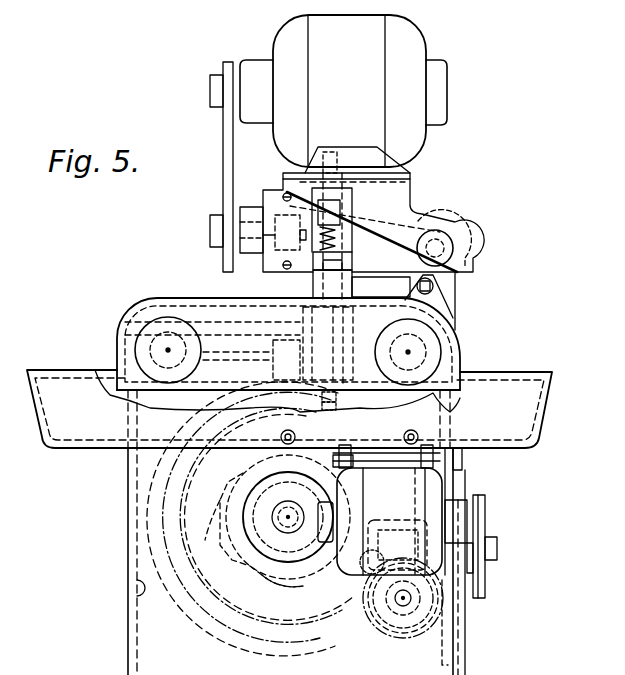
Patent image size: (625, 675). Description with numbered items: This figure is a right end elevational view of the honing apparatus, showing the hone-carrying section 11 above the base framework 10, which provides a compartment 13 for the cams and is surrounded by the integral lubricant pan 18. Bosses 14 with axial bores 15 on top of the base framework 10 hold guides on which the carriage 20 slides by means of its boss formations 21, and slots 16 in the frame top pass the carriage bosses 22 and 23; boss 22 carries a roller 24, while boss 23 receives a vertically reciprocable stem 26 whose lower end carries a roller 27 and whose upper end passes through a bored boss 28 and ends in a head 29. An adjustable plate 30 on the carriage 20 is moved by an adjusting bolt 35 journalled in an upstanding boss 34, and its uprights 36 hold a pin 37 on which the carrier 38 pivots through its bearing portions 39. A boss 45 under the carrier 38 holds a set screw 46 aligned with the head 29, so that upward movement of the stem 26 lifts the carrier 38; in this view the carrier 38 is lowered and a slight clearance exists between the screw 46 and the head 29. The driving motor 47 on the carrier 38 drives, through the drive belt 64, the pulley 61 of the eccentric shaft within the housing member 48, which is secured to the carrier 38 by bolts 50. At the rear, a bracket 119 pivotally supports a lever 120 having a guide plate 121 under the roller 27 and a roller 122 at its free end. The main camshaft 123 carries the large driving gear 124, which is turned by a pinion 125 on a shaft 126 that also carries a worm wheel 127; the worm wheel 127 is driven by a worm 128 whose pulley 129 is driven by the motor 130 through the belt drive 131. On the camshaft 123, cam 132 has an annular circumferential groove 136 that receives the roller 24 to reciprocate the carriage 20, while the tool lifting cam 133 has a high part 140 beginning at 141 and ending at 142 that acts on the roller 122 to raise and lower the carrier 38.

The base framework 10 is at (119, 541).
The hone-carrying section 11 is at (280, 183).
The compartment 13 is at (136, 598).
The bosses 14 is at (120, 355).
The axial bores 15 is at (462, 352).
The elongated slots 16 is at (272, 348).
The lubricant pan 18 is at (552, 400).
The carriage 20 is at (154, 287).
The boss formations 21 is at (332, 399).
The boss 22 is at (273, 324).
The boss 23 is at (303, 306).
The roller 24 is at (270, 388).
The stem 26 is at (353, 366).
The roller 27 is at (321, 411).
The bored boss 28 is at (348, 268).
The head 29 is at (337, 262).
The plate 30 is at (452, 284).
The upstanding boss 34 is at (452, 308).
The adjusting bolt 35 is at (450, 297).
The upright 36 is at (472, 256).
The pin 37 is at (470, 232).
The carrier 38 is at (410, 170).
The bearing portions 39 is at (453, 222).
The boss 45 is at (358, 173).
The set screw 46 is at (340, 236).
The driving motor 47 is at (328, 97).
The housing member 48 is at (240, 218).
The bolts 50 is at (283, 197).
The pulley 61 is at (215, 255).
The drive belt 64 is at (223, 150).
The bracket 119 is at (376, 490).
The lever 120 is at (288, 517).
The guide plate 121 is at (288, 482).
The roller 122 is at (280, 454).
The main camshaft 123 is at (288, 517).
The driving gear 124 is at (245, 612).
The pinion 125 is at (397, 638).
The shaft 126 is at (430, 611).
The worm wheel 127 is at (441, 633).
The worm 128 is at (395, 526).
The pulley 129 is at (487, 590).
The motor 130 is at (425, 482).
The belt drive 131 is at (478, 572).
The cam 132 is at (214, 630).
The cam 133 is at (277, 586).
The annular circumferential groove 136 is at (200, 604).
The high part 140 is at (214, 514).
The beginning point 141 is at (243, 476).
The end point 142 is at (248, 566).